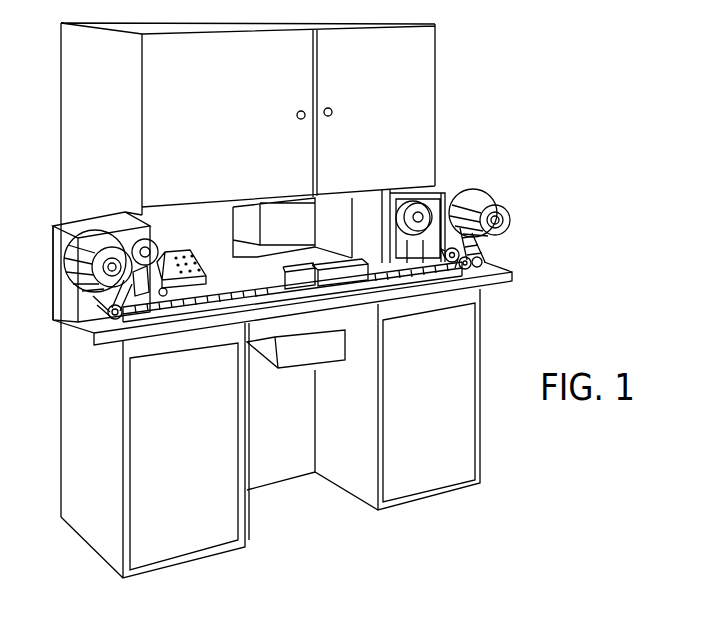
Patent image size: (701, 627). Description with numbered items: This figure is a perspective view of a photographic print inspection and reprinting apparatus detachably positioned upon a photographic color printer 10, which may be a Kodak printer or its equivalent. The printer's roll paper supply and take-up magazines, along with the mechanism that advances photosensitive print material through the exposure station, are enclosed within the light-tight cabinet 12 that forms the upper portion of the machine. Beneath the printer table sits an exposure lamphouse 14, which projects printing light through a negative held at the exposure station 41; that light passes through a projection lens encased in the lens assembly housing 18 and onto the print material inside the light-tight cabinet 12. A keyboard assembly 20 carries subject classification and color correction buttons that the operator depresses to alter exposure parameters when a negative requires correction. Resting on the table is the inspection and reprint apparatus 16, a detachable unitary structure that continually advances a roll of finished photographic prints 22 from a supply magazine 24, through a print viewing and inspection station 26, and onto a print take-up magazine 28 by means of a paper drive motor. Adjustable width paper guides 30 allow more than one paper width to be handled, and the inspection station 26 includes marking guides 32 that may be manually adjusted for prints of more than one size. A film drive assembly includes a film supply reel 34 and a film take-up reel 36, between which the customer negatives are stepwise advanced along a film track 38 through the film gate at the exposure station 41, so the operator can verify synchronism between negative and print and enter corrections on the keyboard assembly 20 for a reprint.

The photographic color printer 10 is at (492, 153).
The light-tight cabinet 12 is at (402, 122).
The exposure lamphouse 14 is at (330, 353).
The inspection and reprint apparatus 16 is at (514, 273).
The lens assembly housing 18 is at (276, 221).
The keyboard assembly 20 is at (178, 254).
The finished photographic prints 22 is at (487, 251).
The supply magazine 24 is at (478, 190).
The print viewing and inspection station 26 is at (328, 267).
The print take-up magazine 28 is at (110, 224).
The adjustable width paper guides 30 is at (200, 288).
The marking guides 32 is at (359, 266).
The film supply reel 34 is at (416, 203).
The film take-up reel 36 is at (151, 242).
The film track 38 is at (162, 296).
The exposure station 41 is at (276, 277).